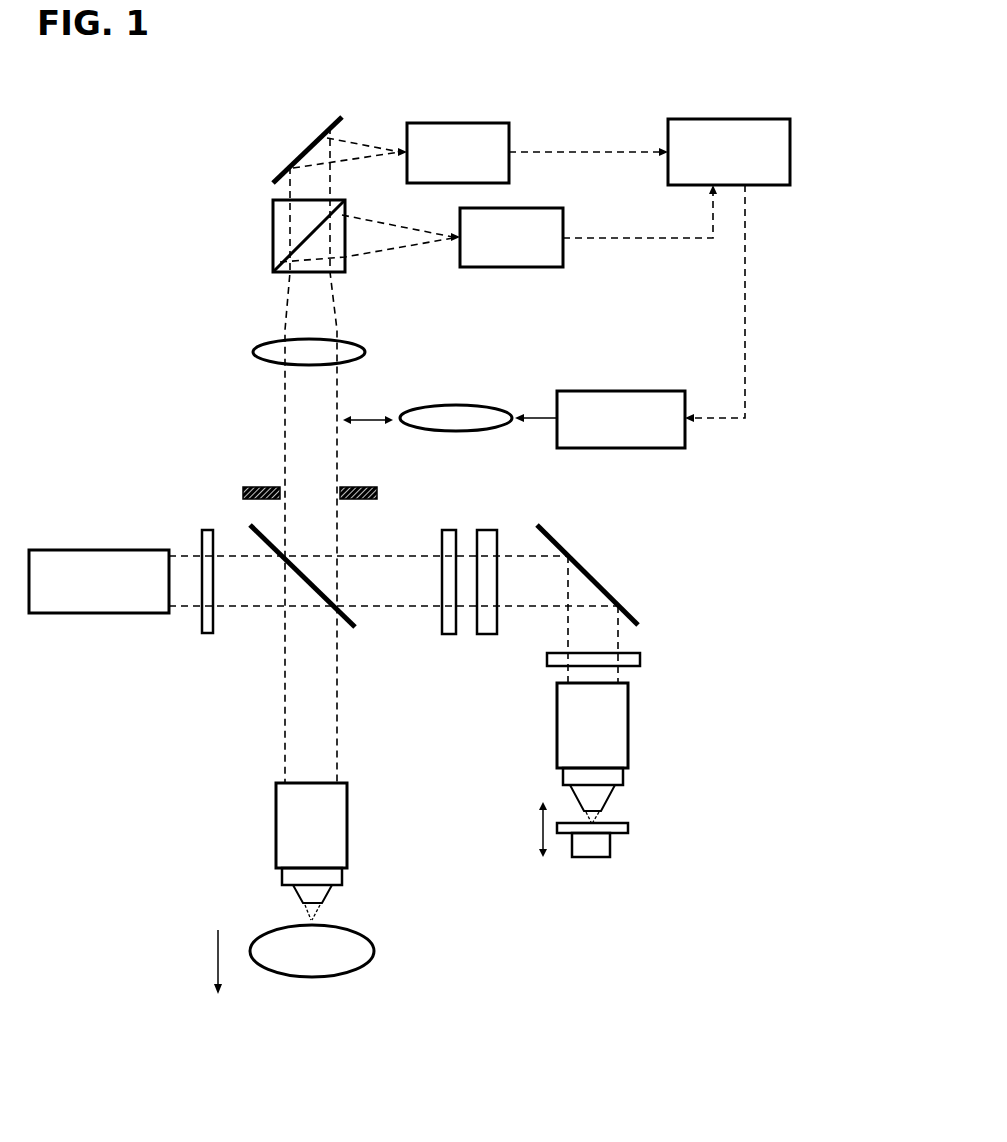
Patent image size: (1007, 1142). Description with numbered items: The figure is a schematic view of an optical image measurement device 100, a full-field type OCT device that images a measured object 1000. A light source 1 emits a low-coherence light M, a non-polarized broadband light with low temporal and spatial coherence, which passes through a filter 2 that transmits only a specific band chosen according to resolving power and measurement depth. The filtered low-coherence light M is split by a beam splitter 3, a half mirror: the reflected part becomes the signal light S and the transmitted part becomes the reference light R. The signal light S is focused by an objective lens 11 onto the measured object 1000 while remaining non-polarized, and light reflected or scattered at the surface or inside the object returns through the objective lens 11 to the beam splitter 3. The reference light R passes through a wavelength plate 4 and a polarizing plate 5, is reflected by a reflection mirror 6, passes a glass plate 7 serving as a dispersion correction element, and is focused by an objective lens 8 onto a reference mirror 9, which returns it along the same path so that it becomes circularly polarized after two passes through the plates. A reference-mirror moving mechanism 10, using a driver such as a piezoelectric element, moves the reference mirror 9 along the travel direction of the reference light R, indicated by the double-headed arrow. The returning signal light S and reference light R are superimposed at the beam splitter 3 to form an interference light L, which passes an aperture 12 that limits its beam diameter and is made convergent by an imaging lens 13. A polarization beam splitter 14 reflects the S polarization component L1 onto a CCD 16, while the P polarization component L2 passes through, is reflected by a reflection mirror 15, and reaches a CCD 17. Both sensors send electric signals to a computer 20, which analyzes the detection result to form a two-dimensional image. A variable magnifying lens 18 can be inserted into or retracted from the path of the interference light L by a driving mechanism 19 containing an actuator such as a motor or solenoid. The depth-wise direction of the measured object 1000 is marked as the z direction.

The optical image measurement device 100 is at (140, 148).
The light source 1 is at (92, 550).
The filter 2 is at (207, 633).
The beam splitter 3 is at (305, 575).
The wavelength plate 4 is at (447, 634).
The polarizing plate 5 is at (487, 530).
The reflection mirror 6 is at (575, 557).
The glass plate 7 is at (640, 656).
The objective lens 8 is at (628, 715).
The reference mirror 9 is at (628, 826).
The reference-mirror moving mechanism 10 is at (597, 857).
The objective lens 11 is at (276, 823).
The aperture 12 is at (377, 488).
The imaging lens 13 is at (275, 345).
The polarization beam splitter 14 is at (273, 250).
The reflection mirror 15 is at (300, 157).
The CCD 16 is at (563, 212).
The CCD 17 is at (509, 125).
The variable magnifying lens 18 is at (483, 405).
The driving mechanism 19 is at (623, 391).
The computer 20 is at (712, 119).
The measured object 1000 is at (318, 977).
The low-coherence light M is at (183, 553).
The interference light L is at (340, 525).
The reference light R is at (397, 608).
The signal light S is at (285, 755).
The S polarization component L1 is at (398, 247).
The P polarization component L2 is at (378, 147).
The z direction z is at (218, 974).